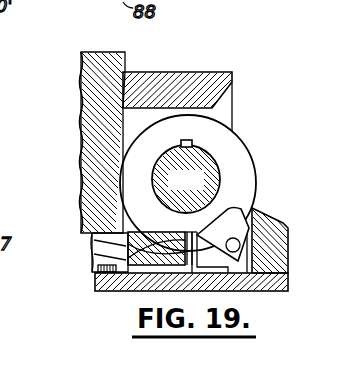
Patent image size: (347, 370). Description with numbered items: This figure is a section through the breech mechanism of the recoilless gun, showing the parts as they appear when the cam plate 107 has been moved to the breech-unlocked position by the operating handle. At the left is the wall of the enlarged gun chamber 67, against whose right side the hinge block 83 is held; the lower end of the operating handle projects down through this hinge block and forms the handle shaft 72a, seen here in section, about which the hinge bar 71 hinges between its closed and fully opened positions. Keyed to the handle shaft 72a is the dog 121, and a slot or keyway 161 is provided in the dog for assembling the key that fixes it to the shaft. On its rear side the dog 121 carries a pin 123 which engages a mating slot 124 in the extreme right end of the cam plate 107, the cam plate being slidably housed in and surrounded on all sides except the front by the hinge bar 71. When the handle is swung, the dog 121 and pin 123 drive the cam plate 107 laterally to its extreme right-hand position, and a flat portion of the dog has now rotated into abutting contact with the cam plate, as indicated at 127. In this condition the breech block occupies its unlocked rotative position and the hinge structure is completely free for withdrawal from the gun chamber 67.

The chamber 67 is at (92, 66).
The hinge block 83 is at (174, 85).
The dog 121 is at (243, 180).
The handle shaft 72a is at (186, 179).
The slot or keyway 161 is at (192, 143).
The cam plate 107 is at (125, 240).
The flat portion of the dog in abutting contact with cam plate 127 is at (124, 256).
The hinge bar 71 is at (288, 285).
The mating slot 124 is at (232, 267).
The pin 123 is at (236, 245).